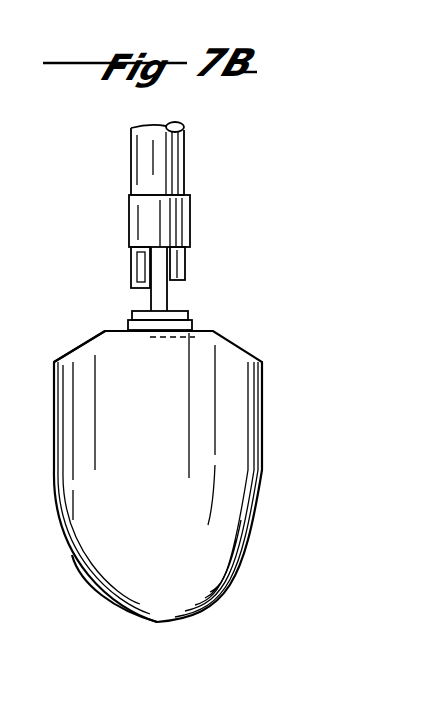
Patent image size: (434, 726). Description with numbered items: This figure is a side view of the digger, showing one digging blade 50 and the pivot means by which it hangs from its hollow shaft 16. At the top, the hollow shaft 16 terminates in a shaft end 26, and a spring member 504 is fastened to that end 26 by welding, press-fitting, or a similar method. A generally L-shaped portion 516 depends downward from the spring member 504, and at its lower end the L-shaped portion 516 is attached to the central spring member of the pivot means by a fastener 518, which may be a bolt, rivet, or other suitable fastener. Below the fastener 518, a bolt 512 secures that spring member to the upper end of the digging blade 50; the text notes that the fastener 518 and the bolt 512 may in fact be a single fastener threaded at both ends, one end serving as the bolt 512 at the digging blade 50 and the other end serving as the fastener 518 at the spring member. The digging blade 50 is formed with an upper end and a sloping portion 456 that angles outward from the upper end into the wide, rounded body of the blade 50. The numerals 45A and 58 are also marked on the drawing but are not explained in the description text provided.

The hollow shaft 16 is at (131, 128).
The shaft end 26 is at (184, 192).
The spring member 504 is at (190, 215).
The fastener 518 is at (148, 306).
The L-shaped portion 516 is at (168, 300).
The bolt 512 is at (190, 338).
The digging blade 50 is at (165, 475).
The sloping portion 456 is at (82, 348).
The top face 45A is at (118, 330).
The bulb end 58 is at (84, 572).